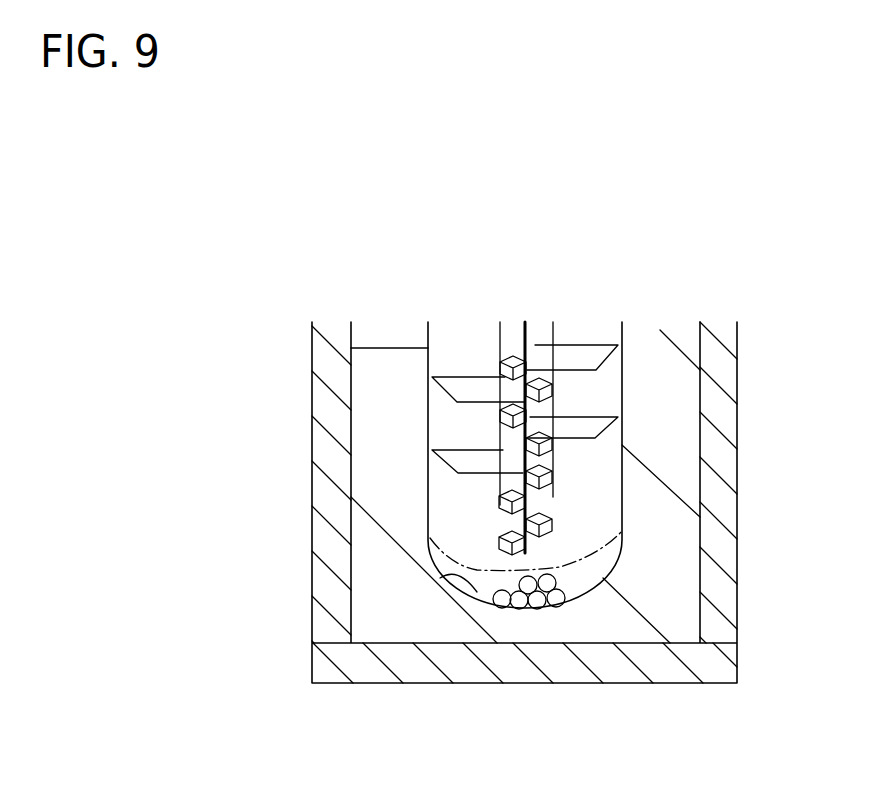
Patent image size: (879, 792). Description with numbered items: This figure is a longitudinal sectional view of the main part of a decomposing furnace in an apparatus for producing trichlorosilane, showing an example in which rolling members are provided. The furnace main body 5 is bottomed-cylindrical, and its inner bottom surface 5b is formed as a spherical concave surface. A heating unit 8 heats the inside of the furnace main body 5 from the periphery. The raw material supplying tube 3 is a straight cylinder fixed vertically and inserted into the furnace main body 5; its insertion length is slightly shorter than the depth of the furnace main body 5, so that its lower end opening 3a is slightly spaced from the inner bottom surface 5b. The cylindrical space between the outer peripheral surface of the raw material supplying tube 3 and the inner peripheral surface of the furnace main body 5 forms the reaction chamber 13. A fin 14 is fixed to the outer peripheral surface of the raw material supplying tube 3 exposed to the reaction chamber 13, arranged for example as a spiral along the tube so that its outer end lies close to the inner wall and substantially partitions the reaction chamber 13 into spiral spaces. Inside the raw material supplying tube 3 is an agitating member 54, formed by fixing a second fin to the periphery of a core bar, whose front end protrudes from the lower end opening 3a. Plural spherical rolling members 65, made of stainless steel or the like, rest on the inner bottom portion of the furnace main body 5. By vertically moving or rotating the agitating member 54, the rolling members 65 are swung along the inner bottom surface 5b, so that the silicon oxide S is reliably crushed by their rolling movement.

The raw material supplying tube 3 is at (632, 394).
The lower end opening 3a is at (550, 500).
The furnace main body 5 is at (430, 497).
The inner bottom surface 5b is at (445, 578).
The heating unit 8 is at (349, 361).
The reaction chamber 13 is at (458, 418).
The fin 14 is at (593, 365).
The agitating member 54 is at (517, 326).
The rolling members 65 is at (503, 608).
The silicon oxide S is at (582, 590).